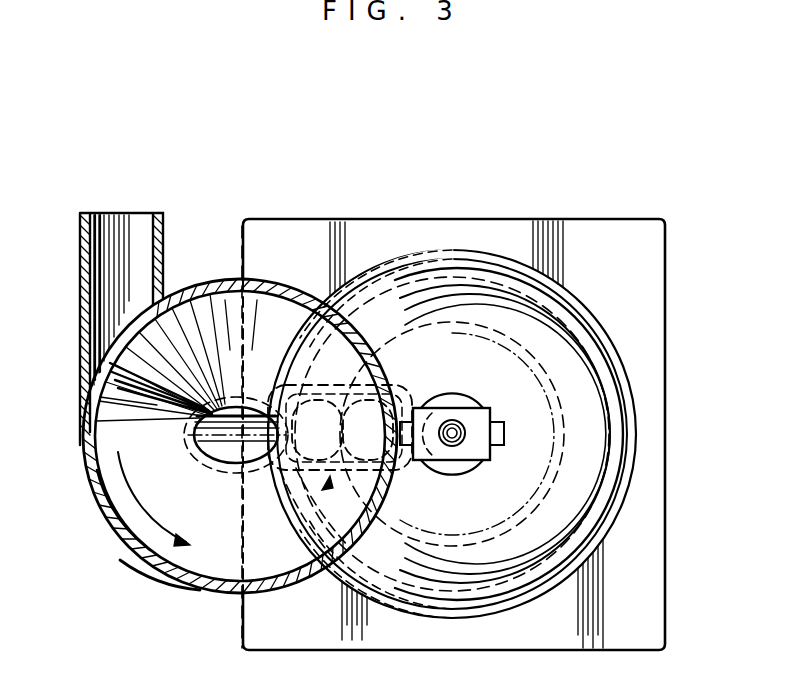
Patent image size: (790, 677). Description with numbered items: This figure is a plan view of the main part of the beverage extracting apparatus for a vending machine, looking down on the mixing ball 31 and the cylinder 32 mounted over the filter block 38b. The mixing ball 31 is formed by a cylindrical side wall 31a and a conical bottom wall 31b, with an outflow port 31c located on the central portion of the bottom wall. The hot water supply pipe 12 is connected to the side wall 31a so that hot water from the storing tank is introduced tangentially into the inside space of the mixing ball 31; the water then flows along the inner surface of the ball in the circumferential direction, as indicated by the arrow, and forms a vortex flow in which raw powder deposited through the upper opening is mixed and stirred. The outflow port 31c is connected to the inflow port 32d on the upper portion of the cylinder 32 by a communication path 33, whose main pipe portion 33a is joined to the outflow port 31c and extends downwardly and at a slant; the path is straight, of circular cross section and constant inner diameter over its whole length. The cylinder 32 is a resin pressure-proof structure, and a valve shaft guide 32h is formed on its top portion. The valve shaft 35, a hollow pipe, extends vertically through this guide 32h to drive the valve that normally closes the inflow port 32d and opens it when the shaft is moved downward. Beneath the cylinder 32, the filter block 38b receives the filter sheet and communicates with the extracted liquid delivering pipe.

The hot water supply pipe 12 is at (80, 250).
The mixing ball 31 is at (110, 542).
The cylindrical side wall 31a is at (158, 568).
The conical bottom wall 31b is at (110, 475).
The outflow port 31c is at (192, 436).
The cylinder 32 is at (587, 333).
The inflow port 32d is at (395, 472).
The valve shaft guide 32h is at (462, 394).
The communication path 33 is at (294, 516).
The main pipe portion 33a is at (252, 490).
The valve shaft 35 is at (458, 440).
The filter block 38b is at (582, 219).